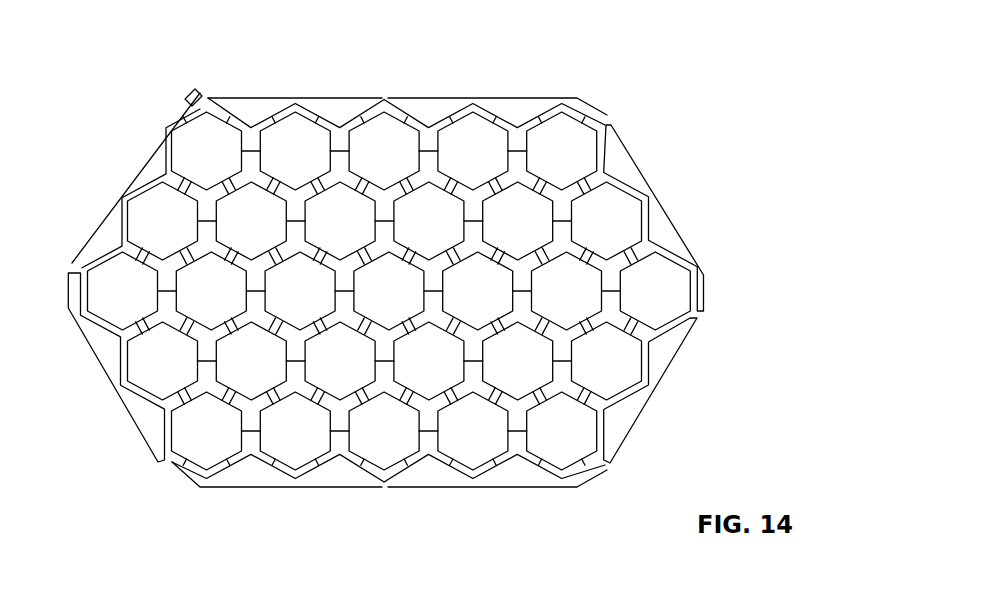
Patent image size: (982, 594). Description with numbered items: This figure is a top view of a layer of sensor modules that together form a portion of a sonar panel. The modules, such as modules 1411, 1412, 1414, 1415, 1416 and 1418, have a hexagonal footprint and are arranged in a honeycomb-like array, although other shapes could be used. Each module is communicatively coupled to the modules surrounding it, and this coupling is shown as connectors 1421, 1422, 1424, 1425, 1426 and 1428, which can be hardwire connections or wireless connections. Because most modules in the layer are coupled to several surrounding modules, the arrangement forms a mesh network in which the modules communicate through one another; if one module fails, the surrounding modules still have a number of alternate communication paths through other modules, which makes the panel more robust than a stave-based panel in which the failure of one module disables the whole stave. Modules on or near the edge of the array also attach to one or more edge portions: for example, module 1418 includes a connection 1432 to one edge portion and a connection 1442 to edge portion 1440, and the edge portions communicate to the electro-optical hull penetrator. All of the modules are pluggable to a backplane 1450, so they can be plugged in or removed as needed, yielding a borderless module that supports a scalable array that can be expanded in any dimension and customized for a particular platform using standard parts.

The module 1411 is at (318, 145).
The module 1412 is at (292, 226).
The module 1414 is at (325, 332).
The module 1415 is at (205, 293).
The module 1416 is at (145, 232).
The module 1418 is at (189, 96).
The connector 1421 is at (230, 150).
The connector 1422 is at (347, 222).
The connector 1424 is at (318, 308).
The connector 1425 is at (192, 250).
The connector 1426 is at (213, 218).
The connector 1428 is at (279, 118).
The connection 1432 is at (183, 100).
The edge portion 1440 is at (313, 98).
The connection 1442 is at (229, 140).
The backplane 1450 is at (605, 407).